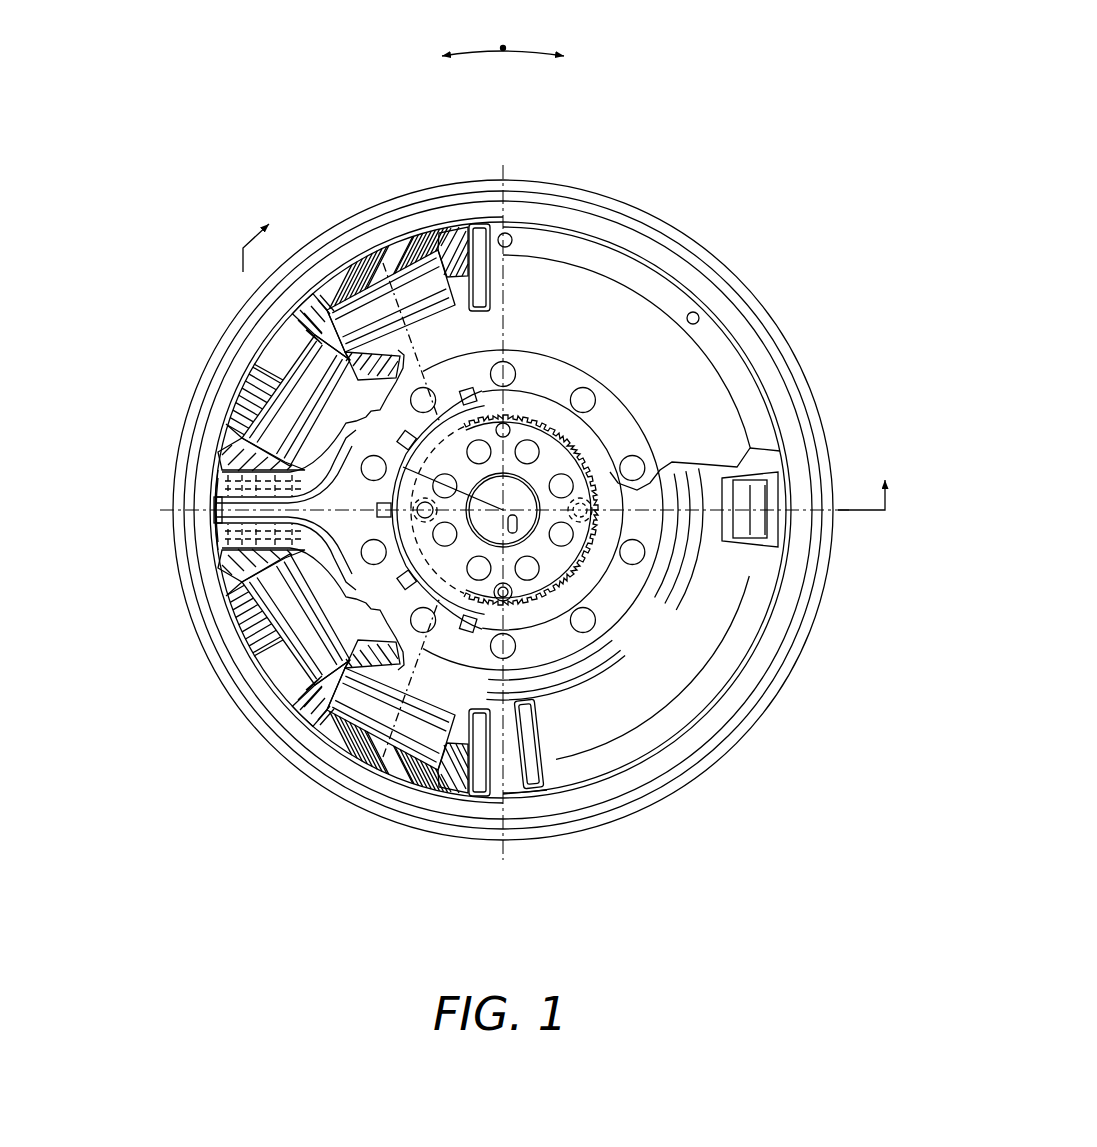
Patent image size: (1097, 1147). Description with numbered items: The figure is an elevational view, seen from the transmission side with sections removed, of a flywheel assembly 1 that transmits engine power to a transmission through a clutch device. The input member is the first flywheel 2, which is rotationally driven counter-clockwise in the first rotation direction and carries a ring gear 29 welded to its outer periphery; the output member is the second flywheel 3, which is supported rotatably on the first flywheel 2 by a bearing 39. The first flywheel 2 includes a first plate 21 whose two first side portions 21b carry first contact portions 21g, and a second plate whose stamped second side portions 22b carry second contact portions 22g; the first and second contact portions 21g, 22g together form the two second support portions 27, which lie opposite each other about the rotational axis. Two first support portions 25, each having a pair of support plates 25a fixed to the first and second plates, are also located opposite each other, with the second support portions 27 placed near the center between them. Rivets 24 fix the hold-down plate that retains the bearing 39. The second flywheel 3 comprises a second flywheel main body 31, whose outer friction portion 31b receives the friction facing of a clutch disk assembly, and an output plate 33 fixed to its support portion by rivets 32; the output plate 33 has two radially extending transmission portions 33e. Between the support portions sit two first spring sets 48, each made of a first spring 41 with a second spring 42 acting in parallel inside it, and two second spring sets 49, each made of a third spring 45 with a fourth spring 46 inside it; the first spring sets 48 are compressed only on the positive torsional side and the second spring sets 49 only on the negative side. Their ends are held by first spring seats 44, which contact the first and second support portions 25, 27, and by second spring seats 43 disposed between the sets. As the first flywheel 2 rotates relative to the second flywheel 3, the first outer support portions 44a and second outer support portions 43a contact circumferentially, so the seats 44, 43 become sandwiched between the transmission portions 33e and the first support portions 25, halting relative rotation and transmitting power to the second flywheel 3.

The flywheel assembly 1 is at (736, 124).
The first flywheel 2 is at (319, 207).
The second flywheel 3 is at (649, 178).
The first plate 21 is at (303, 237).
The first side portions 21b is at (358, 607).
The first contact portions 21g is at (216, 550).
The second side portions 22b is at (700, 690).
The second contact portions 22g is at (760, 520).
The rivets 24 is at (507, 600).
The first support portions 25 is at (495, 205).
The support plates 25a is at (468, 222).
The second support portions 27 is at (213, 518).
The ring gear 29 is at (343, 200).
The second flywheel main body 31 is at (571, 224).
The friction portion 31b is at (633, 325).
The rivets 32 is at (645, 464).
The output plate 33 is at (300, 666).
The transmission portions 33e is at (216, 480).
The bearing 39 is at (609, 578).
The first spring 41 is at (243, 432).
The second spring 42 is at (246, 445).
The second spring seats 43 is at (272, 370).
The second outer support portions 43a is at (270, 322).
The first spring seats 44 is at (433, 234).
The first outer support portions 44a is at (392, 252).
The third spring 45 is at (330, 701).
The fourth spring 46 is at (340, 736).
The first spring sets 48 is at (385, 267).
The second spring sets 49 is at (285, 641).